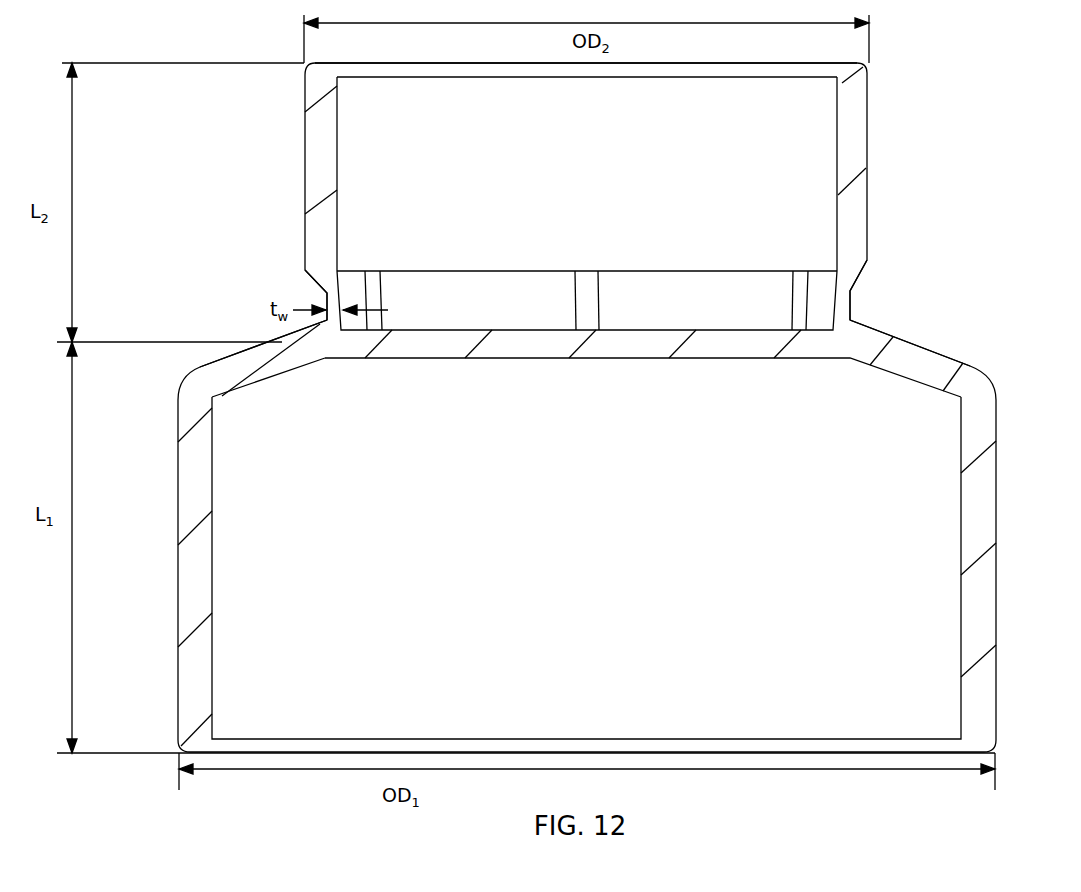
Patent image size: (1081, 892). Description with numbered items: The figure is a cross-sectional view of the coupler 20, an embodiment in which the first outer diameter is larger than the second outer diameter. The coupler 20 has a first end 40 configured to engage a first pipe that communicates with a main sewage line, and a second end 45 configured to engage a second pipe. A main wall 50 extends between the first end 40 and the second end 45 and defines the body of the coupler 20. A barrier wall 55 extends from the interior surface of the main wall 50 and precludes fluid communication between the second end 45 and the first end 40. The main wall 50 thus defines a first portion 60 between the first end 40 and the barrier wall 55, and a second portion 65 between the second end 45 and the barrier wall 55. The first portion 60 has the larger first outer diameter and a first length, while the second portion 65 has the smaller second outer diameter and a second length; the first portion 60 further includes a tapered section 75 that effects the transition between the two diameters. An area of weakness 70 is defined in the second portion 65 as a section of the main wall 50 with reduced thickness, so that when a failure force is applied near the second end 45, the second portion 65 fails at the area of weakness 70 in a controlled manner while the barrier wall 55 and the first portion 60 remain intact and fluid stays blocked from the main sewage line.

The coupler 20 is at (923, 183).
The first end 40 is at (867, 743).
The second end 45 is at (815, 63).
The main wall 50 is at (863, 118).
The barrier wall 55 is at (755, 330).
The first portion 60 is at (165, 342).
The second portion 65 is at (173, 63).
The area of weakness 70 is at (860, 307).
The tapered section 75 is at (933, 338).